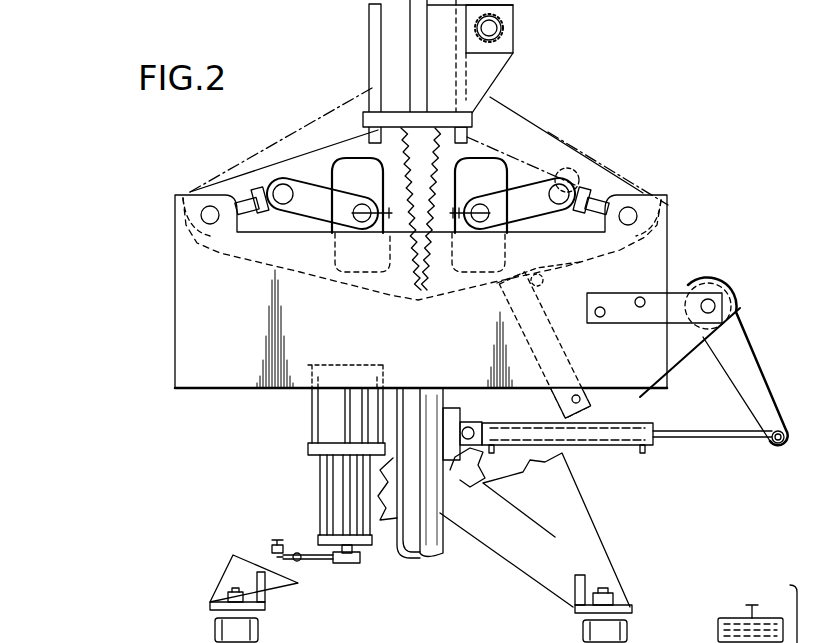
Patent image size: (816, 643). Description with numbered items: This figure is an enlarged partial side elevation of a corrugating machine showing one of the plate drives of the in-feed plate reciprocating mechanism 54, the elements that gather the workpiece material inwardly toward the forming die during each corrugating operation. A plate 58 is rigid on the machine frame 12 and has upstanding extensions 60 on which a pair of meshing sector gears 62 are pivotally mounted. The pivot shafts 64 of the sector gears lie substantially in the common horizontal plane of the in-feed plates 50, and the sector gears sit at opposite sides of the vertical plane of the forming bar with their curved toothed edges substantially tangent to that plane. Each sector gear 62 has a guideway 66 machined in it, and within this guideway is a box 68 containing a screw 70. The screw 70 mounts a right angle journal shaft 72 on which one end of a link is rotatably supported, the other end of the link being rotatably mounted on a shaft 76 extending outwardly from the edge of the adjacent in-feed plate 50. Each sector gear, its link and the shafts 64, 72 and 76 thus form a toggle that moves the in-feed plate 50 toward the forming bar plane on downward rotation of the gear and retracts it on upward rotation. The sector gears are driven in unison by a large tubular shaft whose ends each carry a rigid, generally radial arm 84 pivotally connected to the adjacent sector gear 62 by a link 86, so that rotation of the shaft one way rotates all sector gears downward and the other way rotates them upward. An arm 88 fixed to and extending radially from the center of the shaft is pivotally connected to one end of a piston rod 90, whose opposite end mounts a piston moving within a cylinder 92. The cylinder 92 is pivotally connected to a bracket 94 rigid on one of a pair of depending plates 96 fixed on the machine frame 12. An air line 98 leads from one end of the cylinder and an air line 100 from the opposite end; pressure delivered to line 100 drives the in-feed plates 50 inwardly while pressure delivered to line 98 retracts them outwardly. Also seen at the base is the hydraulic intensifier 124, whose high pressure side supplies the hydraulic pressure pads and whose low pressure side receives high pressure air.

The machine frame 12 is at (196, 398).
The in-feed plate 50 is at (455, 250).
The in-feed plate reciprocating mechanism 54 is at (324, 69).
The plate 58 is at (188, 328).
The upstanding extension 60 is at (193, 232).
The sector gear 62 is at (314, 112).
The pivot shaft 64 is at (207, 224).
The guideway 66 is at (263, 192).
The box 68 is at (242, 228).
The screw 70 is at (260, 214).
The right angle journal shaft 72 is at (573, 168).
The shaft 76 is at (364, 226).
The radial arm 84 is at (694, 360).
The link 86 is at (550, 335).
The arm 88 is at (748, 350).
The piston rod 90 is at (708, 444).
The cylinder 92 is at (590, 445).
The bracket 94 is at (457, 470).
The depending plate 96 is at (420, 560).
The air line 98 is at (645, 452).
The air line 100 is at (494, 452).
The hydraulic intensifier 124 is at (318, 432).